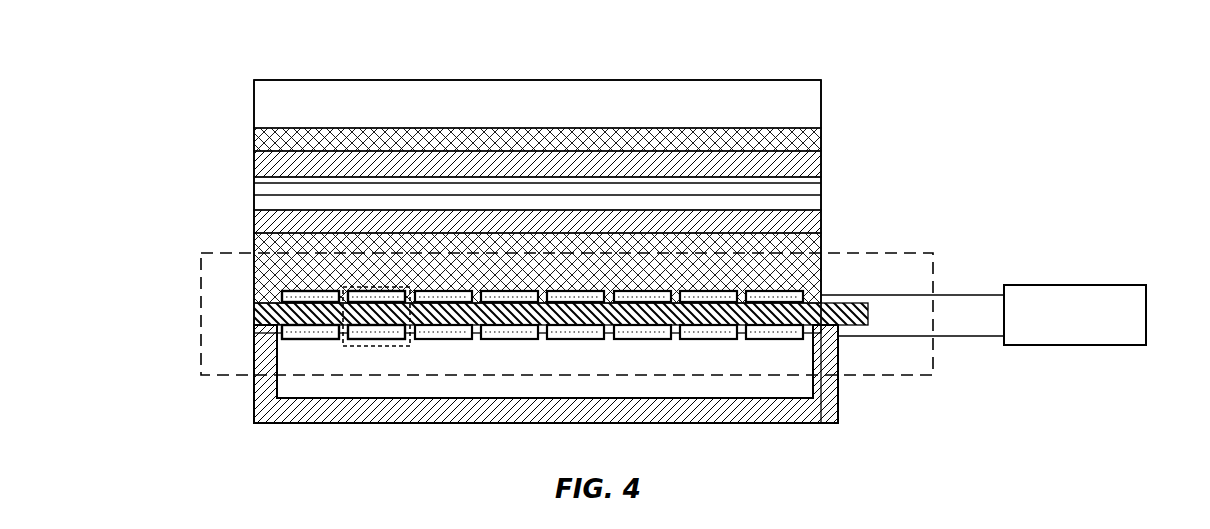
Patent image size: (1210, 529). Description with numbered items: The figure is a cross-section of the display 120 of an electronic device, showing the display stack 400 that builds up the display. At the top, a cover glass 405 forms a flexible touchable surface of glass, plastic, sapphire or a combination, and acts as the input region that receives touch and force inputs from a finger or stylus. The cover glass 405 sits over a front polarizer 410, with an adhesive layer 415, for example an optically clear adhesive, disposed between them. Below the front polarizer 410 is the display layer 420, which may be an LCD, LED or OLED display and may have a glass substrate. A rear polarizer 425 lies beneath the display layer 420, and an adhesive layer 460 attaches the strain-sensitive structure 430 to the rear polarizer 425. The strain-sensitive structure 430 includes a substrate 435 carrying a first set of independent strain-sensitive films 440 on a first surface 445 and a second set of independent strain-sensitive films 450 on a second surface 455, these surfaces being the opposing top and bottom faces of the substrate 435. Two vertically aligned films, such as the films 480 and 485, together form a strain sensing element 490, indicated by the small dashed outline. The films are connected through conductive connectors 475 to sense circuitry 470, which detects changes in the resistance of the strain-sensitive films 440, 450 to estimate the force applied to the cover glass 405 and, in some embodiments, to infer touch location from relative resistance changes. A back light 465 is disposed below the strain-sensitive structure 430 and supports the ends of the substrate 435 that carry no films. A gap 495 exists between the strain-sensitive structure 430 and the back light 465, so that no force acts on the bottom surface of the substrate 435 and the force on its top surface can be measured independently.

The display 120 is at (840, 61).
The display stack 400 is at (162, 82).
The cover glass 405 is at (254, 100).
The front polarizer 410 is at (254, 160).
The adhesive layer 415 is at (821, 138).
The display layer 420 is at (821, 191).
The rear polarizer 425 is at (254, 221).
The strain-sensitive structure 430 is at (201, 309).
The substrate 435 is at (868, 314).
The first set of independent strain-sensitive films 440 is at (280, 301).
The first surface 445 is at (671, 301).
The second set of independent strain-sensitive films 450 is at (280, 328).
The second surface 455 is at (673, 327).
The adhesive layer 460 is at (821, 236).
The back light 465 is at (254, 396).
The sense circuitry 470 is at (1146, 312).
The conductive connectors 475 is at (971, 338).
The strain-sensitive film 480 is at (392, 293).
The strain-sensitive film 485 is at (360, 338).
The strain sensing element 490 is at (345, 348).
The gap 495 is at (443, 356).